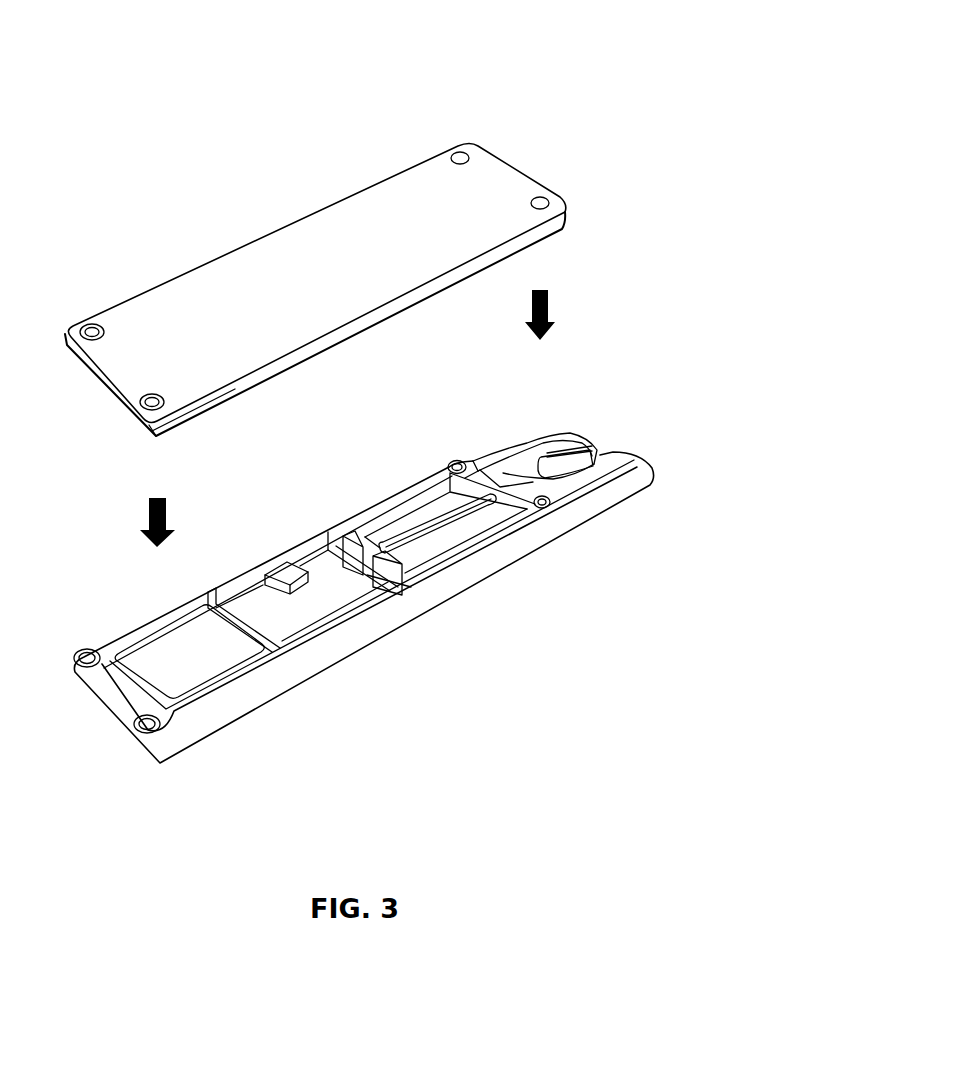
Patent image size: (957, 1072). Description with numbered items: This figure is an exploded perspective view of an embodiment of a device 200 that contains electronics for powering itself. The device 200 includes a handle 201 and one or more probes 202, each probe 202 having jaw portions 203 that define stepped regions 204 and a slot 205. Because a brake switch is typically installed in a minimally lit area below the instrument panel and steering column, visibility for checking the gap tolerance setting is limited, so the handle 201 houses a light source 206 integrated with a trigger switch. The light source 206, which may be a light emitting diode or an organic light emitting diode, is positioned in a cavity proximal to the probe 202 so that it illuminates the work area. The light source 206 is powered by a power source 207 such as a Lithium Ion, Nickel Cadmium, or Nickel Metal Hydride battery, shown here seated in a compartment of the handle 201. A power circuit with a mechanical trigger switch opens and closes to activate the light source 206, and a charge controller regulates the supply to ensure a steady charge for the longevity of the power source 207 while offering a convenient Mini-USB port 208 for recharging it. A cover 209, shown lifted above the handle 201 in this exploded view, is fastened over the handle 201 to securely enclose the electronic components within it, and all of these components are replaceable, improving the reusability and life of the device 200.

The device 200 is at (508, 78).
The handle 201 is at (367, 653).
The probe 202 is at (627, 522).
The jaw portion 203 is at (558, 430).
The stepped region 204 is at (590, 460).
The slot 205 is at (590, 450).
The light source 206 is at (490, 473).
The power source 207 is at (167, 637).
The Mini-USB port 208 is at (283, 547).
The cover 209 is at (238, 267).